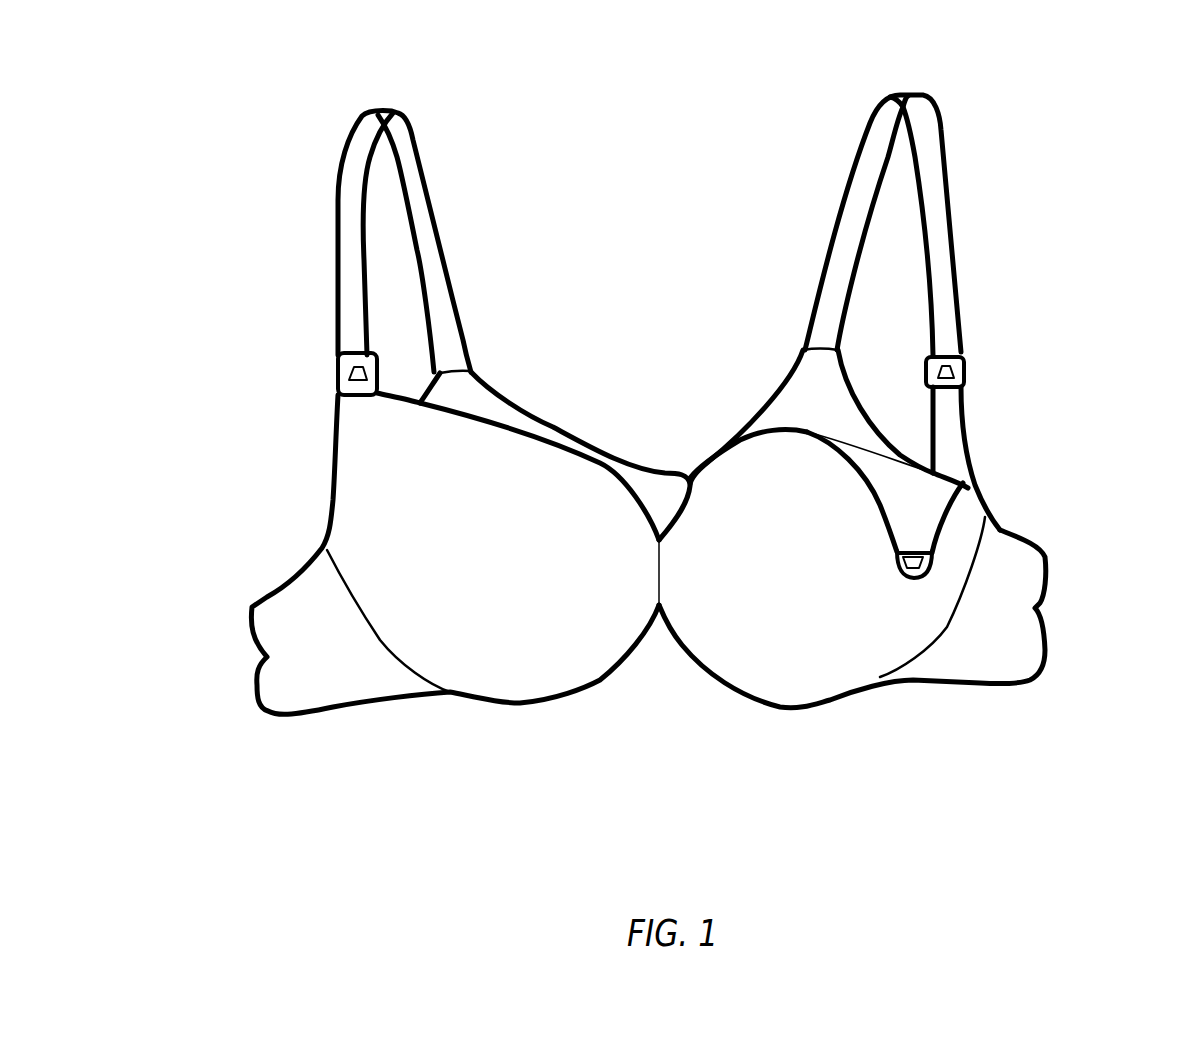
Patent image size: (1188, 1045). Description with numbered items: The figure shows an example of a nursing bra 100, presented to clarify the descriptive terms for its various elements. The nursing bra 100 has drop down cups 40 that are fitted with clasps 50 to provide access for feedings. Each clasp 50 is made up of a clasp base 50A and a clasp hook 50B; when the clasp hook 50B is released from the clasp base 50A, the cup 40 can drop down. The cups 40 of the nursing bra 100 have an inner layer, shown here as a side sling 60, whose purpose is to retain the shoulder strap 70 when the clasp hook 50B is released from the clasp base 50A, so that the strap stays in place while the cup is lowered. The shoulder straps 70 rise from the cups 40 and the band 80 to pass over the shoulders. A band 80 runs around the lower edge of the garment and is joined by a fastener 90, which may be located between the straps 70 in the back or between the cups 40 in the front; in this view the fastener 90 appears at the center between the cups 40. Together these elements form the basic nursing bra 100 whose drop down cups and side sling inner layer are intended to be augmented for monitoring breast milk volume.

The nursing bra 100 is at (748, 137).
The shoulder strap 70 is at (953, 262).
The clasp 50 is at (336, 370).
The clasp base 50A is at (963, 371).
The side sling 60 is at (957, 443).
The clasp hook 50B is at (933, 563).
The fastener 90 is at (663, 475).
The band 80 is at (323, 718).
The drop down cup 40 is at (817, 620).